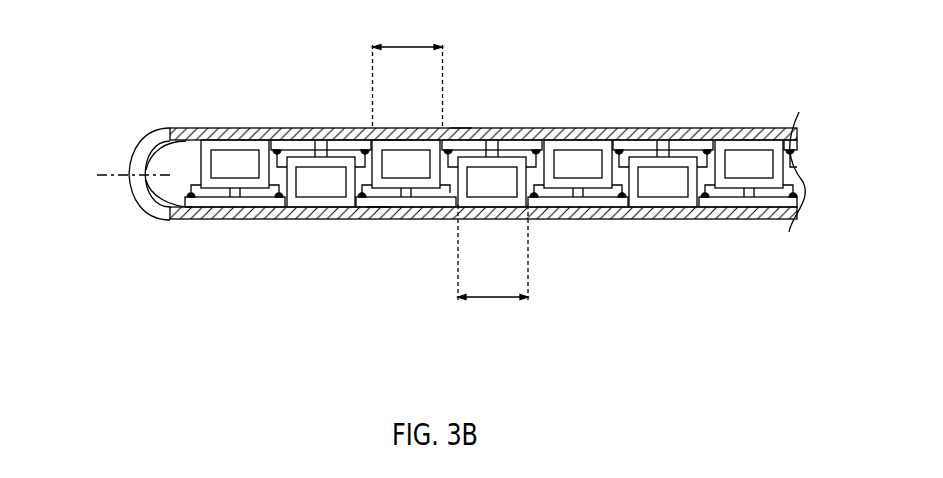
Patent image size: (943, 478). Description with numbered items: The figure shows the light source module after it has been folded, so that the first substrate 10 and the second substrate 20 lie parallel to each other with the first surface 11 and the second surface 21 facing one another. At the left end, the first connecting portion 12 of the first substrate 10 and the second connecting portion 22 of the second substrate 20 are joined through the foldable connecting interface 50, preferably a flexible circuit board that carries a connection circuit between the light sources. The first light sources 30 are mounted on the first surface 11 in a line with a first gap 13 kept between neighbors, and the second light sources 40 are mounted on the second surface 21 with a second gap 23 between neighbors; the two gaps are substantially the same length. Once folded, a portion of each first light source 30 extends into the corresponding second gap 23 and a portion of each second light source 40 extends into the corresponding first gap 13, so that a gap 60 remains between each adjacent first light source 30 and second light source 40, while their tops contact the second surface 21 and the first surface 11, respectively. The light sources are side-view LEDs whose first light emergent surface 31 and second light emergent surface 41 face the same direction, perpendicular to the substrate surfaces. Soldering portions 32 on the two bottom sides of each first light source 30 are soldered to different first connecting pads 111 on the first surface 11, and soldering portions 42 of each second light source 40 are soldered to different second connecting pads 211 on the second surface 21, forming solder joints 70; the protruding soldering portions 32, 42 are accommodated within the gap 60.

The first substrate 10 is at (702, 127).
The first surface 11 is at (142, 160).
The first connecting portion 12 is at (165, 127).
The first connecting pads 111 is at (461, 129).
The first gap 13 is at (408, 74).
The second substrate 20 is at (703, 219).
The second surface 21 is at (152, 195).
The second connecting portion 22 is at (163, 221).
The second connecting pads 211 is at (378, 208).
The second gap 23 is at (493, 266).
The first light source 30 is at (512, 192).
The first light emergent surface 31 is at (507, 192).
The soldering portions 32 is at (617, 156).
The second light source 40 is at (389, 175).
The second light emergent surface 41 is at (392, 129).
The soldering portions 42 is at (449, 201).
The foldable connecting interface 50 is at (151, 143).
The gap 60 is at (535, 172).
The solder joints 70 is at (535, 203).